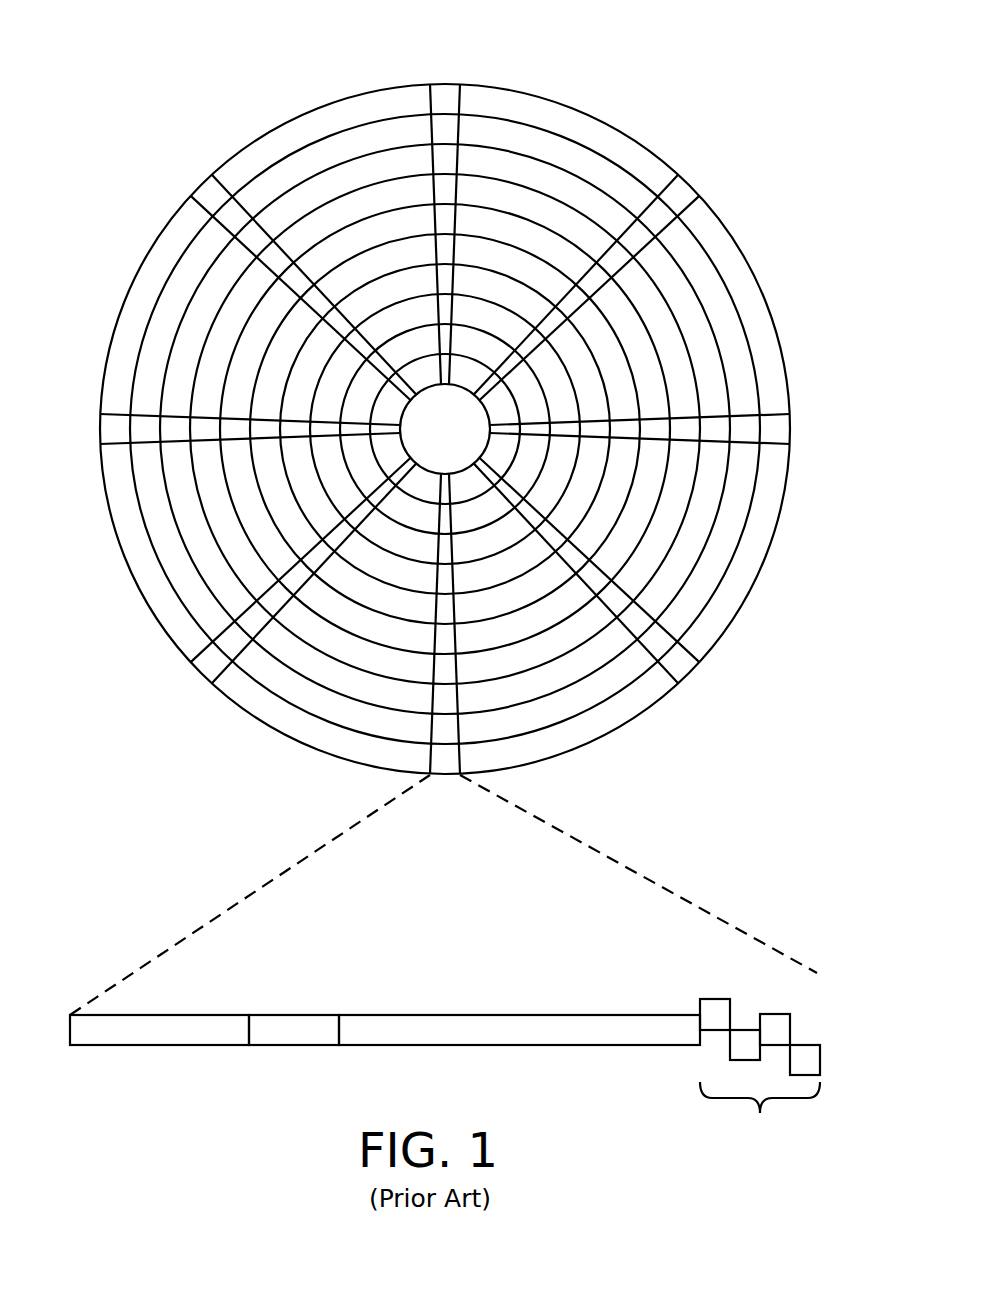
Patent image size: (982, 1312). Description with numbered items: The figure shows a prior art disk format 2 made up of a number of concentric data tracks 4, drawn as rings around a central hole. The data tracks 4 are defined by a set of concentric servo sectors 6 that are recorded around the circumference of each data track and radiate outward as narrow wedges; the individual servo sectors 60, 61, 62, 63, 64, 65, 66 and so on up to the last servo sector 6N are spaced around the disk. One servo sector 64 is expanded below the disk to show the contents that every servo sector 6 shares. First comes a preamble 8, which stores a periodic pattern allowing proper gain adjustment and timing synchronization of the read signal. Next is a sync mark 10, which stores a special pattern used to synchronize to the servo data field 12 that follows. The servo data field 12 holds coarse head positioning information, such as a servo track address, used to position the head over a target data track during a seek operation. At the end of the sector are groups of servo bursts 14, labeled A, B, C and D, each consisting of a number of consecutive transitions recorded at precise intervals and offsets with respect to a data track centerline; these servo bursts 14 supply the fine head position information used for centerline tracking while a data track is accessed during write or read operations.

The disk format 2 is at (192, 90).
The data tracks 4 is at (585, 135).
The servo sector 6 is at (442, 519).
The servo sector 60 is at (445, 97).
The servo sector 61 is at (680, 193).
The servo sector 62 is at (780, 432).
The servo sector 63 is at (678, 665).
The servo sector 64 is at (292, 857).
The servo sector 65 is at (207, 668).
The servo sector 66 is at (105, 429).
The servo sector 6N is at (207, 193).
The preamble 8 is at (138, 1047).
The sync mark 10 is at (291, 1047).
The servo data field 12 is at (507, 1047).
The servo bursts 14 is at (688, 982).